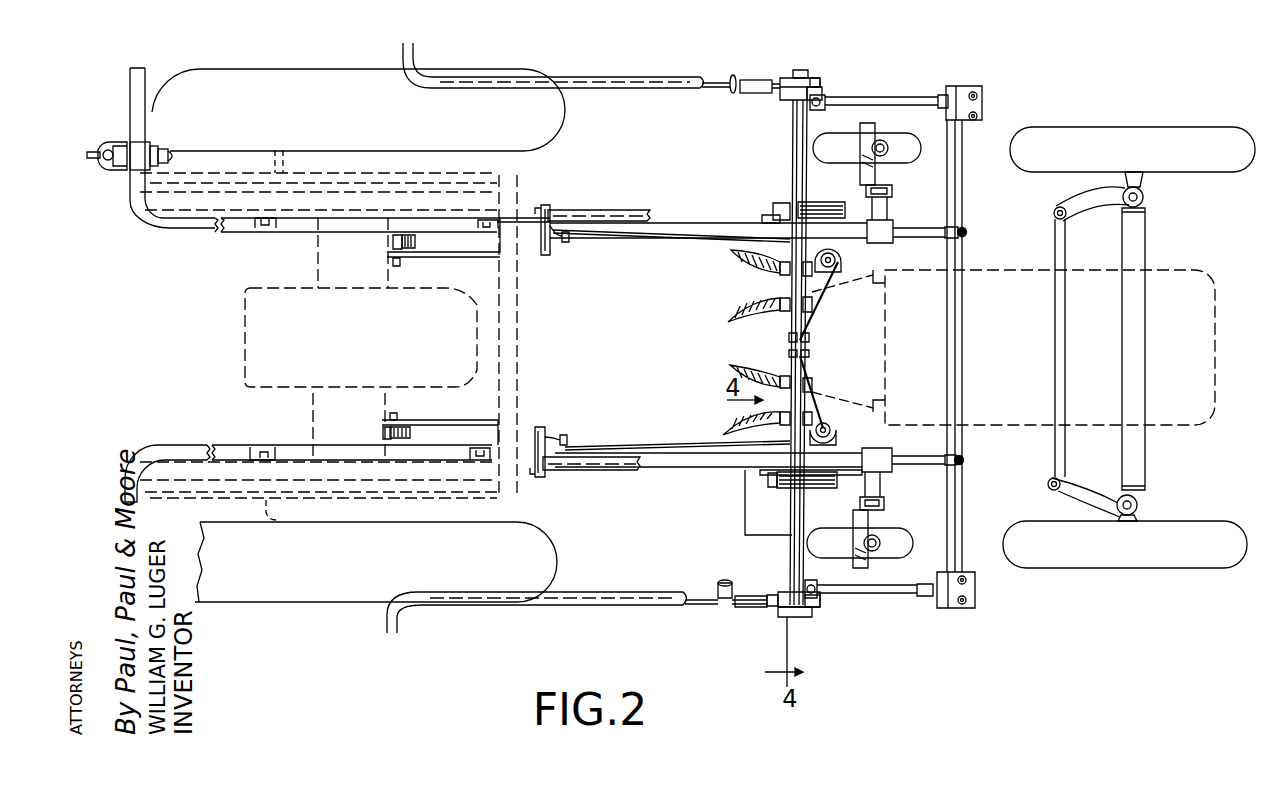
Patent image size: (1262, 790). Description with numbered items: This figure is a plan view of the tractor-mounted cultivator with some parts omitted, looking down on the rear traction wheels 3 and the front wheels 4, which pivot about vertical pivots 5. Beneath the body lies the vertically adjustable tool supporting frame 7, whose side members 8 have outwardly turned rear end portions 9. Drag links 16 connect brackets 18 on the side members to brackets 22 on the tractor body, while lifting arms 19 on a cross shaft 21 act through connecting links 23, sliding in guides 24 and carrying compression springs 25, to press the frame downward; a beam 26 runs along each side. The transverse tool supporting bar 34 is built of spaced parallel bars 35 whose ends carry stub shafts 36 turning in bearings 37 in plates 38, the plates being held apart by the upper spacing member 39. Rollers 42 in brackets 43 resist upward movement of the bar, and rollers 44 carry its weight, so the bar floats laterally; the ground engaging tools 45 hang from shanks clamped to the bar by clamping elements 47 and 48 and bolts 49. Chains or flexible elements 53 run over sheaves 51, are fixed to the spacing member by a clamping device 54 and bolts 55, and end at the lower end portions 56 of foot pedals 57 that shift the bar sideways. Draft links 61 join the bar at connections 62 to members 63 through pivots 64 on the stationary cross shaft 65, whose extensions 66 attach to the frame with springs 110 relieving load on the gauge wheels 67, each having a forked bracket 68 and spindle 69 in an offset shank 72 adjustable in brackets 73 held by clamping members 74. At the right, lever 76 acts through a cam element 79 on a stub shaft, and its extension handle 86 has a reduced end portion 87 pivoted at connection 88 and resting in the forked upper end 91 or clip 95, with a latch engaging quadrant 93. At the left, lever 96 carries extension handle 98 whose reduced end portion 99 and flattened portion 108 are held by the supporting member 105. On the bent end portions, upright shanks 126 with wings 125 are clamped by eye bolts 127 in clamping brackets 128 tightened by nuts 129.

The rear traction wheels 3 is at (290, 85).
The front wheels 4 is at (1200, 148).
The vertical pivots 5 is at (1145, 197).
The tool supporting frame 7 is at (693, 472).
The side members 8 is at (668, 223).
The rear end portions 9 is at (130, 77).
The drag links 16 is at (290, 208).
The brackets 18 is at (264, 229).
The lifting arms 19 is at (436, 258).
The cross shaft 21 is at (519, 388).
The brackets 22 is at (478, 450).
The connecting links 23 is at (399, 264).
The guides 24 is at (416, 243).
The compression springs 25 is at (393, 241).
The beam 26 is at (615, 210).
The tool supporting bar 34 is at (791, 143).
The spaced parallel bars 35 is at (791, 160).
The stub shafts 36 is at (800, 70).
The bearings 37 is at (787, 101).
The plates 38 is at (752, 94).
The spacing member 39 is at (790, 550).
The rollers 42 is at (815, 203).
The brackets 43 is at (776, 204).
The rollers 44 is at (780, 267).
The ground engaging tools 45 is at (742, 258).
The clamping element 47 is at (780, 272).
The clamping element 48 is at (812, 272).
The bolts 49 is at (740, 375).
The sheaves 51 is at (840, 268).
The chains or flexible elements 53 is at (648, 242).
The clamping device 54 is at (789, 345).
The bolts 55 is at (809, 340).
The lower end portions 56 is at (567, 242).
The foot pedals 57 is at (546, 205).
The draft links 61 is at (875, 97).
The connection 62 is at (820, 108).
The members 63 is at (980, 98).
The pivots 64 is at (944, 95).
The cross shaft 65 is at (964, 338).
The extensions 66 is at (940, 228).
The gauge wheels 67 is at (902, 148).
The forked bracket 68 is at (872, 125).
The spindle 69 is at (882, 148).
The offset shanks 72 is at (892, 190).
The brackets 73 is at (887, 204).
The clamping members 74 is at (880, 243).
The lever 76 is at (768, 602).
The cam element 79 is at (813, 79).
The operating member or extension handle 86 is at (440, 593).
The reduced end portion 87 is at (695, 606).
The pivotal connection 88 is at (773, 610).
The forked upper end 91 is at (722, 606).
The quadrant 93 is at (818, 95).
The clip 95 is at (724, 580).
The lever 96 is at (792, 78).
The extension handle 98 is at (470, 89).
The reduced end portion 99 is at (708, 82).
The supporting member 105 is at (733, 75).
The flattened portion 108 is at (755, 80).
The springs 110 is at (967, 232).
The wing 125 is at (92, 160).
The upright shank 126 is at (106, 150).
The eye bolts 127 is at (170, 155).
The clamping brackets 128 is at (140, 143).
The nuts 129 is at (157, 148).